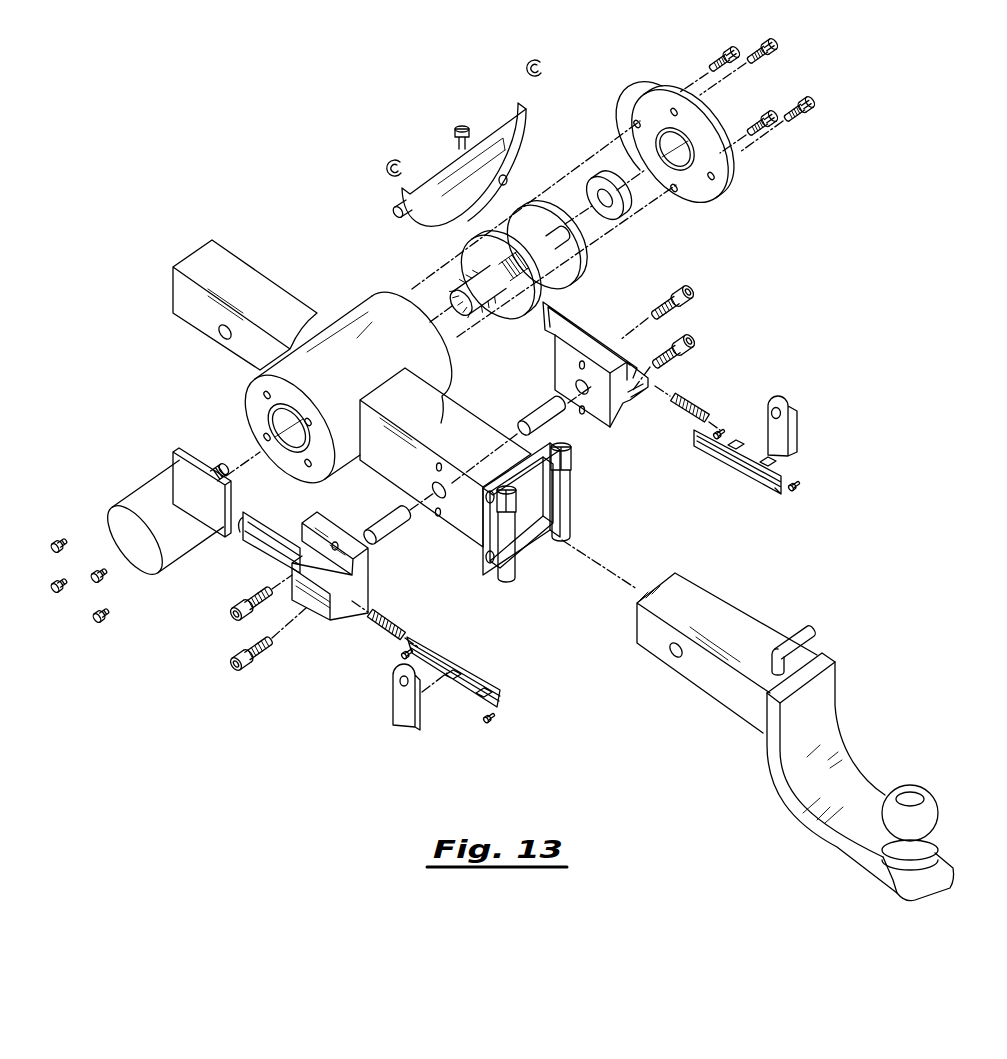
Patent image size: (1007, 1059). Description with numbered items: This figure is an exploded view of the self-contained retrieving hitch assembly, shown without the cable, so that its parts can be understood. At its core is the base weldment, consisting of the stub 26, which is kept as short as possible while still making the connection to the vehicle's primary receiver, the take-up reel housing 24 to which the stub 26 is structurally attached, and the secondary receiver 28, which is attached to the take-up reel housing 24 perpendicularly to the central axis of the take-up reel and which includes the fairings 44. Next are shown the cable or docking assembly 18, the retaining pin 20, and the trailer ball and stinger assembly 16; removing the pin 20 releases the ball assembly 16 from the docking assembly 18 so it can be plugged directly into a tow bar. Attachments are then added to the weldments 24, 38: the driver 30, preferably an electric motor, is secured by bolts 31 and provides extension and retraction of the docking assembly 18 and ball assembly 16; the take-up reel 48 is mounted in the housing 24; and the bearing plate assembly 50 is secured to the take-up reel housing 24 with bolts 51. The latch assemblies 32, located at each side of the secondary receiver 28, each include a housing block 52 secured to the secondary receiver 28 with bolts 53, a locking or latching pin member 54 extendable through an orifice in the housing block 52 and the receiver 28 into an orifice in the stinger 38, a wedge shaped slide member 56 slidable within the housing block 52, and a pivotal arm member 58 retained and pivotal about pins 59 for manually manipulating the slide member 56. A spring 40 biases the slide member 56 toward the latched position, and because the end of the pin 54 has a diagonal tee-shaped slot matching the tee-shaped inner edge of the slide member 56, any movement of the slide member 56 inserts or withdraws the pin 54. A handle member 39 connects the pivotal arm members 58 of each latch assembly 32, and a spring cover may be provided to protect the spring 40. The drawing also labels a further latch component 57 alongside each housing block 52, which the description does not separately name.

The trailer ball and stinger assembly 16 is at (823, 729).
The cable or docking assembly 18 is at (795, 695).
The retaining pin 20 is at (795, 630).
The take-up reel housing 24 is at (368, 315).
The stub or stinger member 26 is at (232, 268).
The secondary receiver housing assembly 28 is at (447, 407).
The drive member 30 is at (152, 502).
The bolts 31 is at (92, 625).
The latch assembly 32 is at (501, 529).
The stinger 38 is at (708, 605).
The handle member 39 is at (502, 118).
The spring 40 is at (690, 402).
The fairings 44 is at (568, 497).
The take-up reel 48 is at (525, 313).
The bearing plate assembly 50 is at (648, 191).
The bolts 51 is at (807, 100).
The housing block 52 is at (622, 413).
The bolts 53 is at (697, 318).
The pin member 54 is at (543, 413).
The wedge shaped slide member 56 is at (772, 497).
The clip plate 57 is at (545, 308).
The pivotal arm member 58 is at (797, 427).
The pins 59 is at (596, 583).